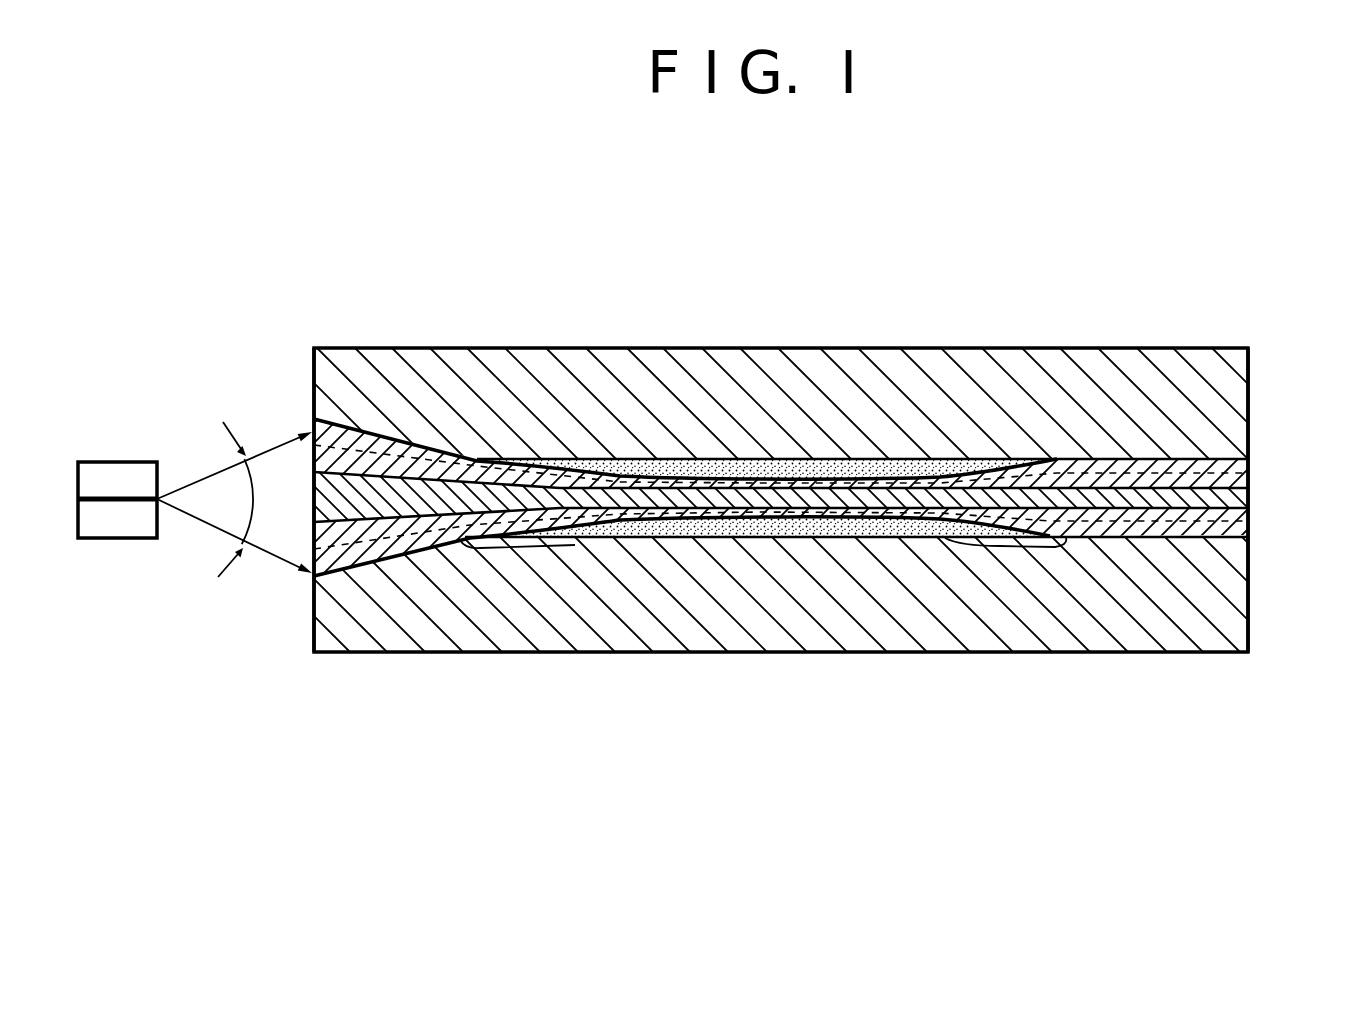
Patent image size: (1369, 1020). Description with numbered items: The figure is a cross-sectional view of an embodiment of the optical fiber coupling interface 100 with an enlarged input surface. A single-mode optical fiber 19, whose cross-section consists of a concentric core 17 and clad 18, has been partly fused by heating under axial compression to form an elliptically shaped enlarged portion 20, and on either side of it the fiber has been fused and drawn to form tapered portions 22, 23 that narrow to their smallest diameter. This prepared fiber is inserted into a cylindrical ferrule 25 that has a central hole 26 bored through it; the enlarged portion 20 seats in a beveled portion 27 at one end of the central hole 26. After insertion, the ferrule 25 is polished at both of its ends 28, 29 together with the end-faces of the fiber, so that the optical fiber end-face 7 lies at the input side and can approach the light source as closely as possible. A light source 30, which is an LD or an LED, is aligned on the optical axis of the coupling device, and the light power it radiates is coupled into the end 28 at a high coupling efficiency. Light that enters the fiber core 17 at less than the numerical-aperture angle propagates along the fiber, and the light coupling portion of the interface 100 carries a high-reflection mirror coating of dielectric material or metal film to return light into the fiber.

The optical fiber interface 100 is at (938, 310).
The optical fiber end-face 7 is at (312, 455).
The core 17 is at (567, 497).
The clad 18 is at (448, 545).
The single-mode optical fiber 19 is at (558, 783).
The enlarged portion 20 is at (366, 553).
The drawn portion 22 is at (597, 543).
The drawn portion 23 is at (948, 538).
The ferrule 25 is at (1128, 358).
The central hole 26 is at (763, 465).
The beveled portion 27 is at (376, 432).
The end 28 is at (310, 618).
The end 29 is at (1249, 401).
The light source 30 is at (107, 525).